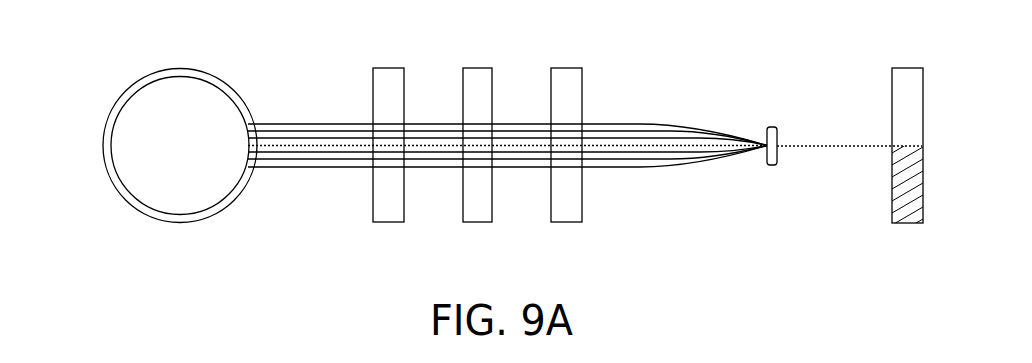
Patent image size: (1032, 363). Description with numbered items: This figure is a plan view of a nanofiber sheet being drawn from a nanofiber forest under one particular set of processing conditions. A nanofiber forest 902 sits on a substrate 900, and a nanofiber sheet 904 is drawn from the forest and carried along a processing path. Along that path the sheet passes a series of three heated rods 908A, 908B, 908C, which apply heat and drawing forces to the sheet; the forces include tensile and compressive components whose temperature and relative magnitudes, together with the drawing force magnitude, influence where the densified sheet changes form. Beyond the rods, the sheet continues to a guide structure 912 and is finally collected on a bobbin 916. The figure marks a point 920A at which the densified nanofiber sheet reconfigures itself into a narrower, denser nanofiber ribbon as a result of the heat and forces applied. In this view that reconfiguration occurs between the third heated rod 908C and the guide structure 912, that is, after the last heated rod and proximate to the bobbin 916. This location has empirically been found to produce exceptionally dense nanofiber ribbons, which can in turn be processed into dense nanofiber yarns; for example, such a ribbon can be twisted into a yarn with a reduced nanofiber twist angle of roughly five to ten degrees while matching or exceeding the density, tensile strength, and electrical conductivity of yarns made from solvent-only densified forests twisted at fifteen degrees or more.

The substrate 900 is at (181, 67).
The nanofiber forest 902 is at (113, 160).
The nanofiber sheet 904 is at (285, 122).
The heated rod 908A is at (383, 67).
The heated rod 908B is at (473, 67).
The third heated rod 908C is at (561, 67).
The point 920A is at (742, 100).
The guide structure 912 is at (772, 165).
The bobbin 916 is at (903, 68).